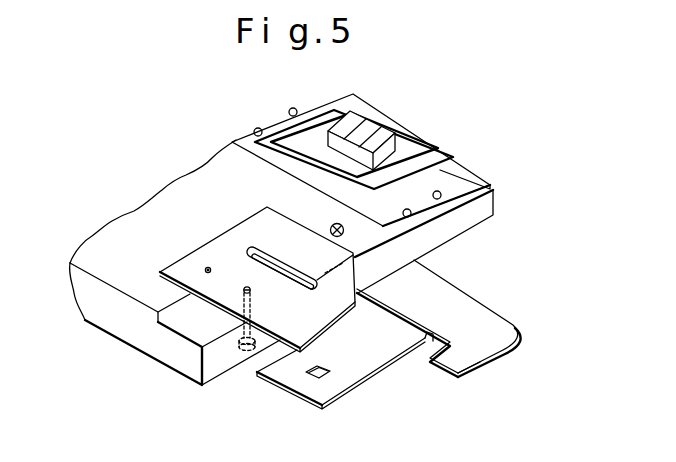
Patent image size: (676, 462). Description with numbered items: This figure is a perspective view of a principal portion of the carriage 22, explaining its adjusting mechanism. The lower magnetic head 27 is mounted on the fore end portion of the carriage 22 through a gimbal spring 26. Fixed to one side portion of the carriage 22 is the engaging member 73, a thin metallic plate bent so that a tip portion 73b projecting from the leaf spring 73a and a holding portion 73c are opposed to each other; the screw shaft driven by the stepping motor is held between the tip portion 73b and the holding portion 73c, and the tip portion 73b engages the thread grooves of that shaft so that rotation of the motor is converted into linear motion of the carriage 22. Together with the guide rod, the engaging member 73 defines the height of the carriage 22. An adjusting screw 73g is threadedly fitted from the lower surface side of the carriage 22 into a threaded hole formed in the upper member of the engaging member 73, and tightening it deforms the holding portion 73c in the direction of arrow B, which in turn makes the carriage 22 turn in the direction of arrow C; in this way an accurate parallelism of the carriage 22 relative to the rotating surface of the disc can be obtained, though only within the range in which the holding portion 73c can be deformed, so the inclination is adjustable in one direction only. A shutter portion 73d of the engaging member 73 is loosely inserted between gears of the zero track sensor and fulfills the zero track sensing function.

The carriage 22 is at (137, 223).
The gimbal spring 26 is at (398, 117).
The lower magnetic head 27 is at (392, 152).
The engaging member 73 is at (447, 284).
The leaf spring 73a is at (415, 344).
The tip portion 73b is at (324, 379).
The holding portion 73c is at (293, 338).
The shutter portion 73d is at (452, 380).
The adjusting screw 73g is at (281, 289).
The direction of deformation of holding portion B is at (343, 316).
The direction of carriage turning C is at (205, 327).